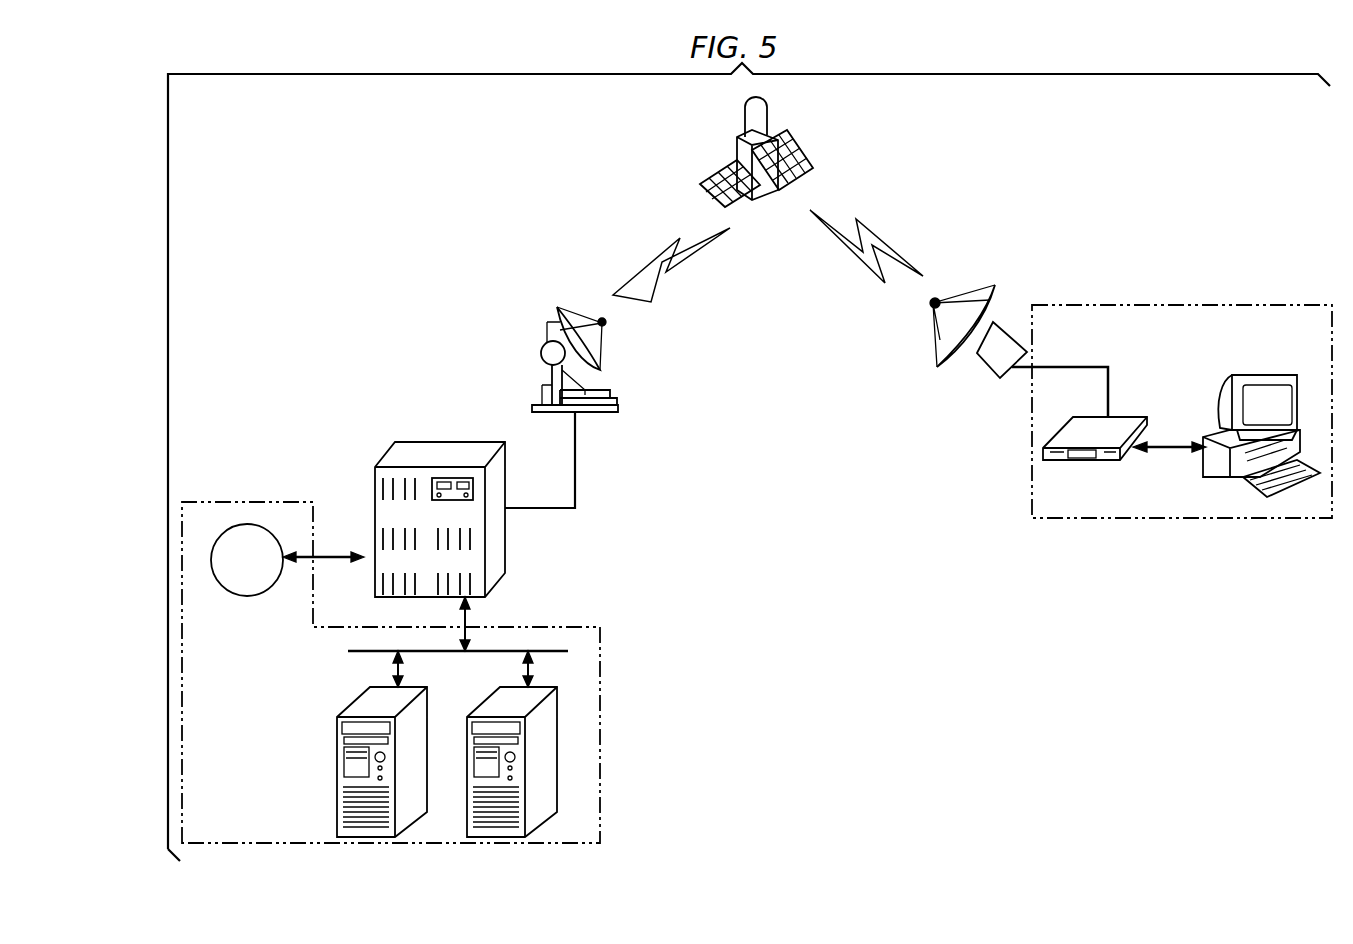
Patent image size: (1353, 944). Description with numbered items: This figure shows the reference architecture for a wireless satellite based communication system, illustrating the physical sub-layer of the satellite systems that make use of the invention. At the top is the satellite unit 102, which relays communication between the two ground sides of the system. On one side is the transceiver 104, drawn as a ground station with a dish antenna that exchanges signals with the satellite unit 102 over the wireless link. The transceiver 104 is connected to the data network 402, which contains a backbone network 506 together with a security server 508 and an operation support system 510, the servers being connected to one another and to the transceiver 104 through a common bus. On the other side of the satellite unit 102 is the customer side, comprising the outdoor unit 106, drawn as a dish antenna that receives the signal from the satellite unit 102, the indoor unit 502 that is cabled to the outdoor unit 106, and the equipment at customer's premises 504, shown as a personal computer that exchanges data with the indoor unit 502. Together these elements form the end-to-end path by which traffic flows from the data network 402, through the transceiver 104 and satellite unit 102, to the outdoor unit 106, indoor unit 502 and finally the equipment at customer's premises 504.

The satellite unit 102 is at (770, 118).
The transceiver 104 is at (380, 374).
The outdoor unit 106 is at (1084, 181).
The data network 402 is at (288, 502).
The indoor unit 502 is at (1138, 418).
The equipment at customer's premises 504 is at (1245, 375).
The backbone network 506 is at (236, 597).
The security server 508 is at (425, 765).
The operation support system 510 is at (555, 765).